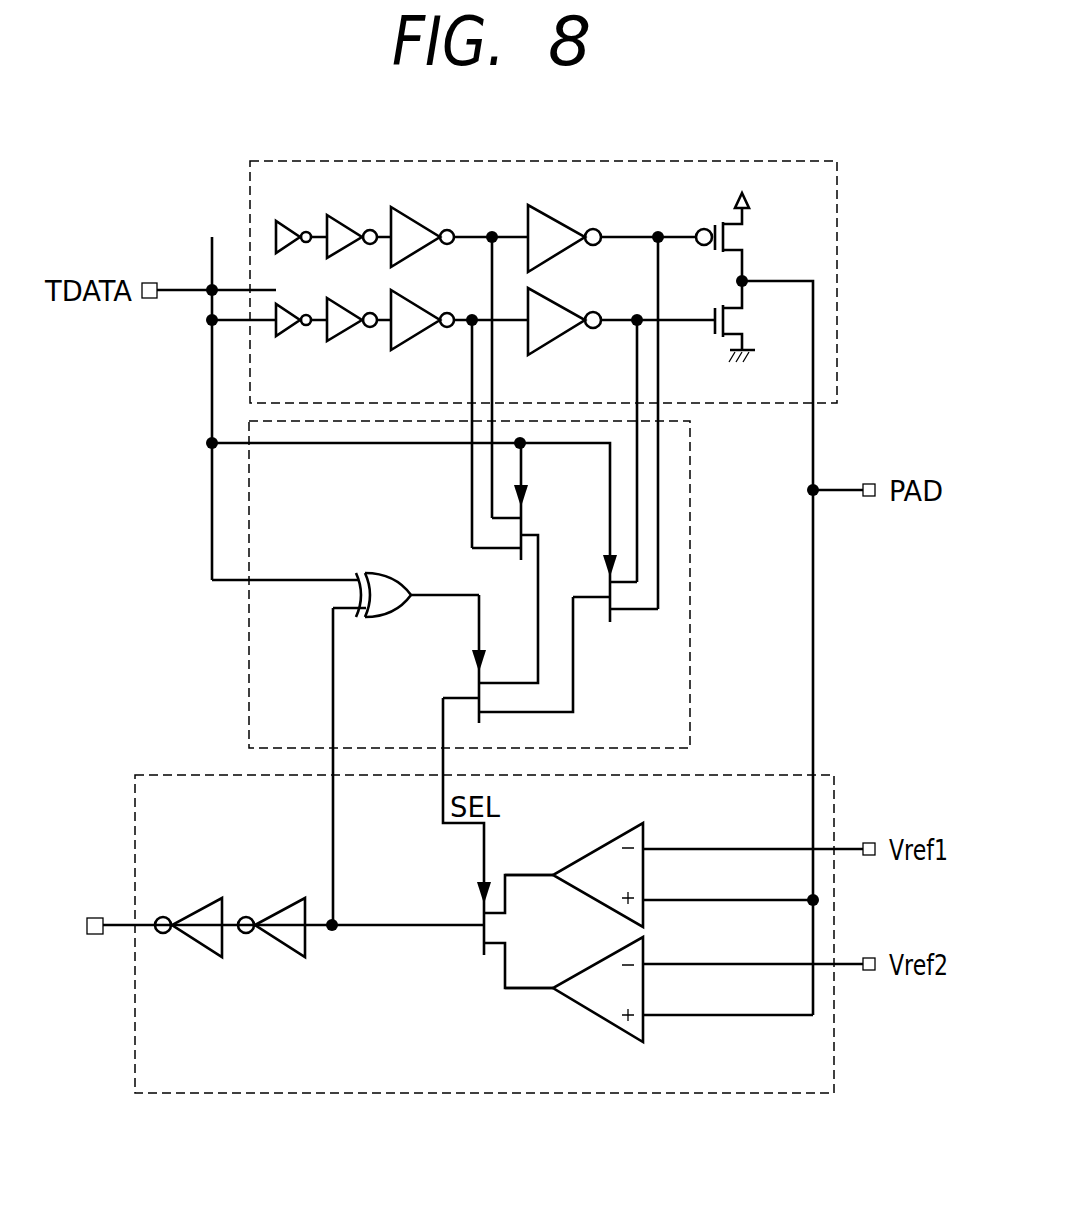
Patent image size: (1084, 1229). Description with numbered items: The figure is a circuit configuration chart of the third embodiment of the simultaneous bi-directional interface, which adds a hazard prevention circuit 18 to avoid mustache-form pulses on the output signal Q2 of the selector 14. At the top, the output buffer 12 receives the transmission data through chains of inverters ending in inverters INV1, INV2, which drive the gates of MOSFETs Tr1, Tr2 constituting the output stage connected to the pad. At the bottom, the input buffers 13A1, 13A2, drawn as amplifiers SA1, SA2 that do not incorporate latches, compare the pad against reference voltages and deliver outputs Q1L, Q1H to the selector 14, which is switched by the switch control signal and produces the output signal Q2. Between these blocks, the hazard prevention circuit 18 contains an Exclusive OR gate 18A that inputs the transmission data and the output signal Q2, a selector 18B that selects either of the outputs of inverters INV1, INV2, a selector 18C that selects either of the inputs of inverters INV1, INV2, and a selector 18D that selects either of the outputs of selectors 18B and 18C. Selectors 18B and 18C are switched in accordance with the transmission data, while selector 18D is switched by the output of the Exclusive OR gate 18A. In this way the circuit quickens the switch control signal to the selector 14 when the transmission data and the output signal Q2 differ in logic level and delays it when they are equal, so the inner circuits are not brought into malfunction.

The output buffer 12 is at (543, 558).
The hazard prevention circuit 18 is at (434, 688).
The Exclusive OR gate 18A is at (380, 573).
The selector 18B is at (603, 618).
The selector 18C is at (520, 518).
The selector 18D is at (477, 677).
The input buffer 13A1 is at (700, 857).
The input buffer 13A2 is at (700, 1009).
The selector 14 is at (480, 948).
The inverter INV1 is at (590, 203).
The inverter INV2 is at (565, 341).
The MOSFET Tr1 is at (741, 249).
The MOSFET Tr2 is at (751, 333).
The sense amplifier SA1 is at (593, 850).
The sense amplifier SA2 is at (593, 1017).
The sense amplifier output Q1L is at (525, 857).
The sense amplifier output Q1H is at (525, 1008).
The output signal Q2 is at (349, 910).